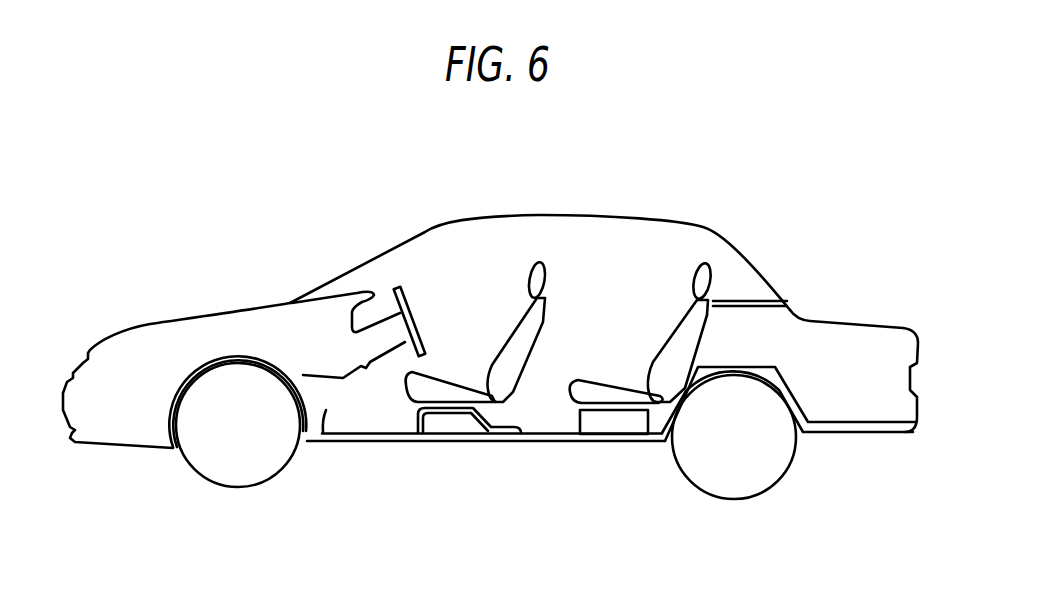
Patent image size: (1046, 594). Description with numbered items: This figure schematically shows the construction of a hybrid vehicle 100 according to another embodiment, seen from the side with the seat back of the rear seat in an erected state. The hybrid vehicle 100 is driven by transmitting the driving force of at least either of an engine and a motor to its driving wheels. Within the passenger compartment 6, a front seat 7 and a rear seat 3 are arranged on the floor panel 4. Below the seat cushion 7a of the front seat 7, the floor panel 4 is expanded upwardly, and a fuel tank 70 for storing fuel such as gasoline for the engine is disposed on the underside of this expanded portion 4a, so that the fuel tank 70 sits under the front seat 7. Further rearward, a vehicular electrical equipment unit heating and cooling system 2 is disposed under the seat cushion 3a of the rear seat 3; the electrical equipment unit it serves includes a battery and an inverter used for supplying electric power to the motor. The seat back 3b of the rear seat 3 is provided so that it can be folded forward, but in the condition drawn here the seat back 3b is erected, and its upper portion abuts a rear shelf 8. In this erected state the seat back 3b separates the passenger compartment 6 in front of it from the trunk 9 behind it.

The hybrid vehicle 100 is at (577, 207).
The passenger compartment 6 is at (589, 247).
The front seat 7 is at (502, 352).
The seat cushion 7a is at (448, 380).
The fuel tank 70 is at (447, 428).
The floor panel 4 is at (538, 443).
The expanded portion 4a is at (417, 419).
The rear seat 3 is at (657, 358).
The seat cushion 3a is at (598, 378).
The seat back 3b is at (685, 318).
The vehicular electrical equipment unit heating and cooling system 2 is at (617, 427).
The rear shelf 8 is at (733, 301).
The trunk 9 is at (843, 351).